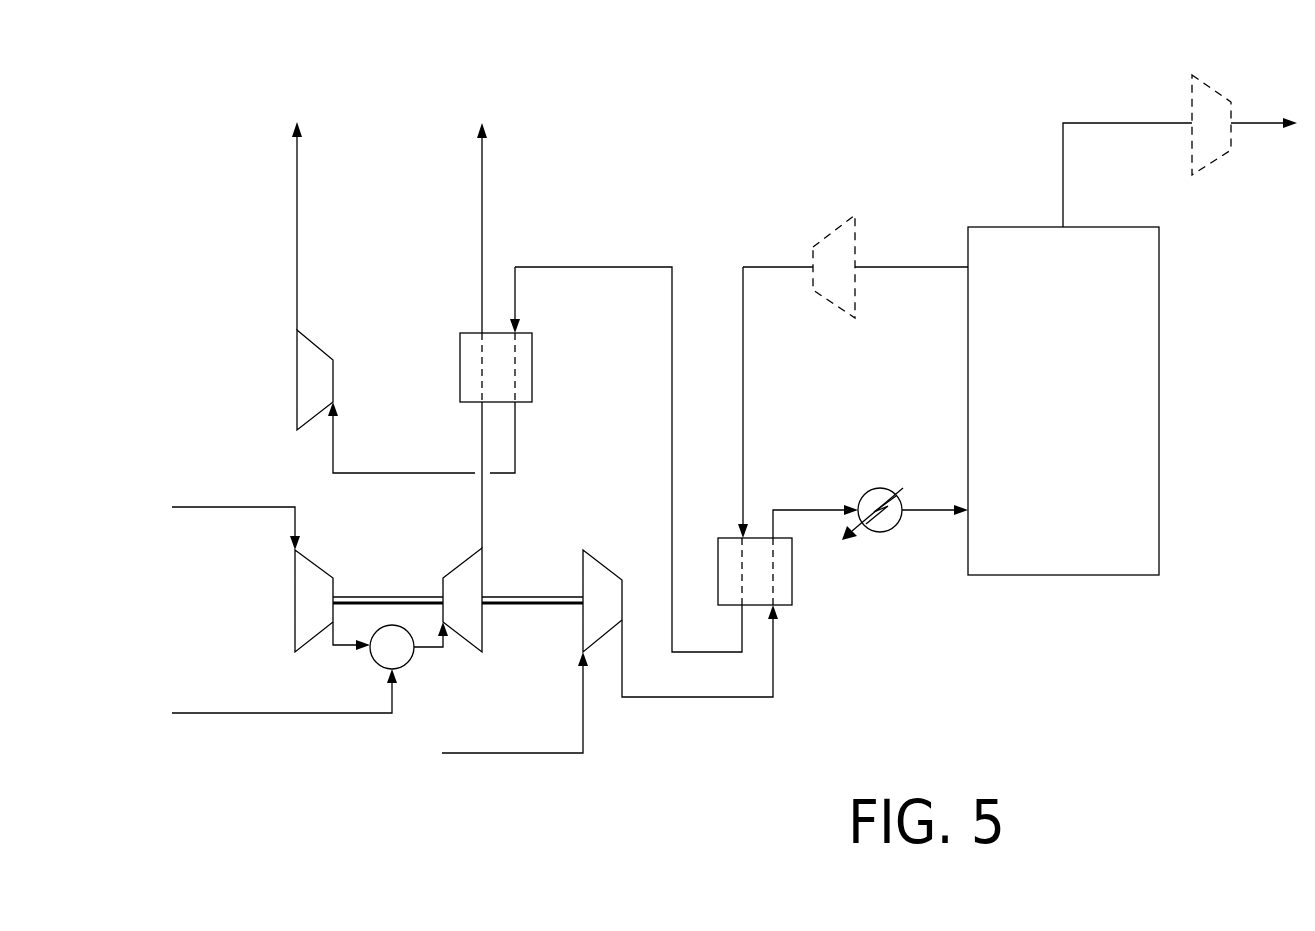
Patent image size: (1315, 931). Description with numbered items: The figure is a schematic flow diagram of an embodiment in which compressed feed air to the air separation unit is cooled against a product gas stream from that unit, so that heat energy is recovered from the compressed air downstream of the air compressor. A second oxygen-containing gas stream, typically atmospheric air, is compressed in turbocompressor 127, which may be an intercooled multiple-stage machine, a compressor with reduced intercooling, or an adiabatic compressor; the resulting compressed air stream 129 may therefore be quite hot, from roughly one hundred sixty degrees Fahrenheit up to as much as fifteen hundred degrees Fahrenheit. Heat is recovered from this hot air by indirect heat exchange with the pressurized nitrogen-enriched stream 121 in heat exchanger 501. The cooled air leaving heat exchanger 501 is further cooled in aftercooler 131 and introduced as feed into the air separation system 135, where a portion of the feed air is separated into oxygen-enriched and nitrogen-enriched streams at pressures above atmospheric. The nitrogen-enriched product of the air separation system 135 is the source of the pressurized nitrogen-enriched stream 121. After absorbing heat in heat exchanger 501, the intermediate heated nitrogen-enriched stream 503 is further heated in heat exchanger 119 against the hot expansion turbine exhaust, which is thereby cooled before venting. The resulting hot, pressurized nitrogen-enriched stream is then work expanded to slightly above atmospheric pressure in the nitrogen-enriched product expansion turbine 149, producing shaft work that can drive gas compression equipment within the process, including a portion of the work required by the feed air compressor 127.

The heat exchanger 119 is at (532, 370).
The pressurized nitrogen-enriched stream 121 is at (776, 267).
The turbocompressor 127 is at (600, 560).
The compressed air stream 129 is at (737, 697).
The aftercooler 131 is at (879, 489).
The air separation system 135 is at (1092, 417).
The nitrogen-enriched product expansion turbine 149 is at (297, 384).
The heat exchanger 501 is at (792, 579).
The intermediate heated nitrogen-enriched stream 503 is at (673, 322).